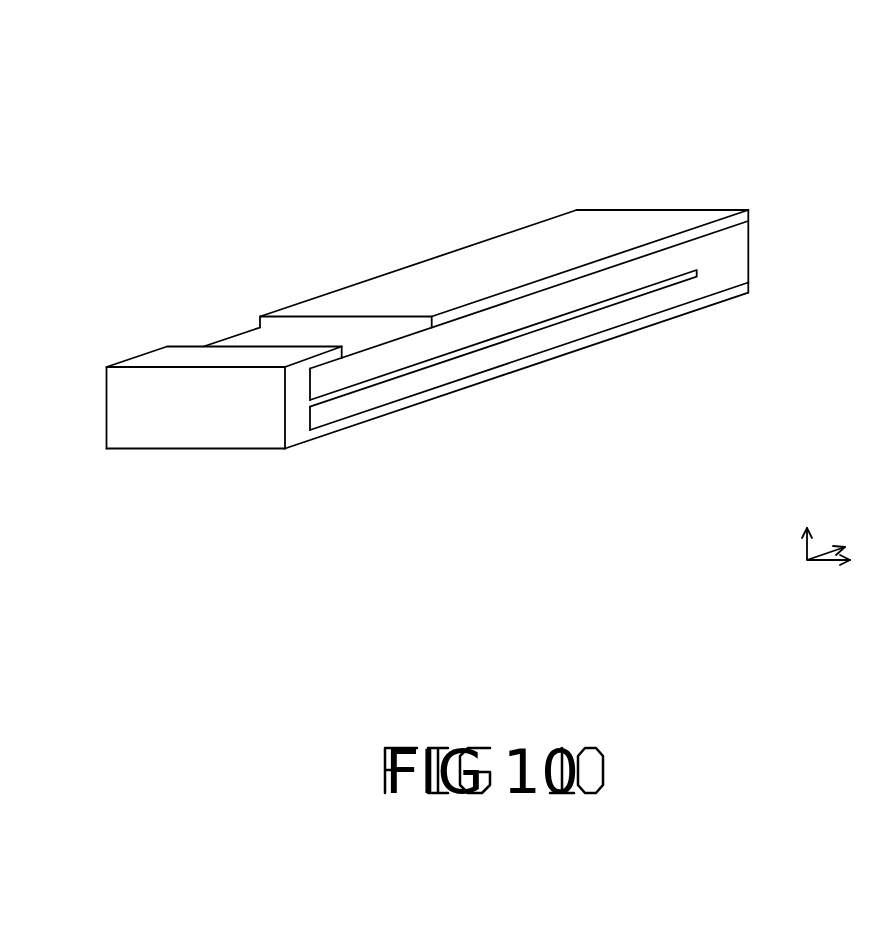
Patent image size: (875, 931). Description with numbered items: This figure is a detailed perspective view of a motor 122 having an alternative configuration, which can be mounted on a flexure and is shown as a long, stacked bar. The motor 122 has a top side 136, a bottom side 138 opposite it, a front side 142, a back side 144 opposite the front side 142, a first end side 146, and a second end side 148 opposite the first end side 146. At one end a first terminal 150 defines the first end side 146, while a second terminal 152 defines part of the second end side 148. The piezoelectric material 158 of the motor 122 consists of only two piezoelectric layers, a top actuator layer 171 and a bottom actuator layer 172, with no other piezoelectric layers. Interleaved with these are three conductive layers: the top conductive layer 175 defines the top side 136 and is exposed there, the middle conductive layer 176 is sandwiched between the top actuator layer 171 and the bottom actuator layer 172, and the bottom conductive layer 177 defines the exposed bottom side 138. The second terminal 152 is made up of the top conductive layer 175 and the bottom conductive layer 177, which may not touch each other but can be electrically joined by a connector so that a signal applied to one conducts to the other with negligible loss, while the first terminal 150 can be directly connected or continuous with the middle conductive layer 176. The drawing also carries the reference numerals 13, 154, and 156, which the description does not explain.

The motor 122 is at (303, 117).
The coordinate system 13 is at (830, 572).
The top side 136 is at (428, 272).
The bottom side 138 is at (393, 405).
The front side 142 is at (375, 363).
The back side 144 is at (242, 333).
The first end side 146 is at (138, 428).
The second end side 148 is at (748, 247).
The first terminal 150 is at (233, 422).
The second terminal 152 is at (737, 215).
The front face of end block 154 is at (125, 400).
The lower end edge 156 is at (748, 292).
The piezoelectric material 158 is at (348, 408).
The top actuator layer 171 is at (567, 298).
The bottom actuator layer 172 is at (532, 345).
The top conductive layer 175 is at (632, 257).
The middle conductive layer 176 is at (650, 292).
The bottom conductive layer 177 is at (610, 335).